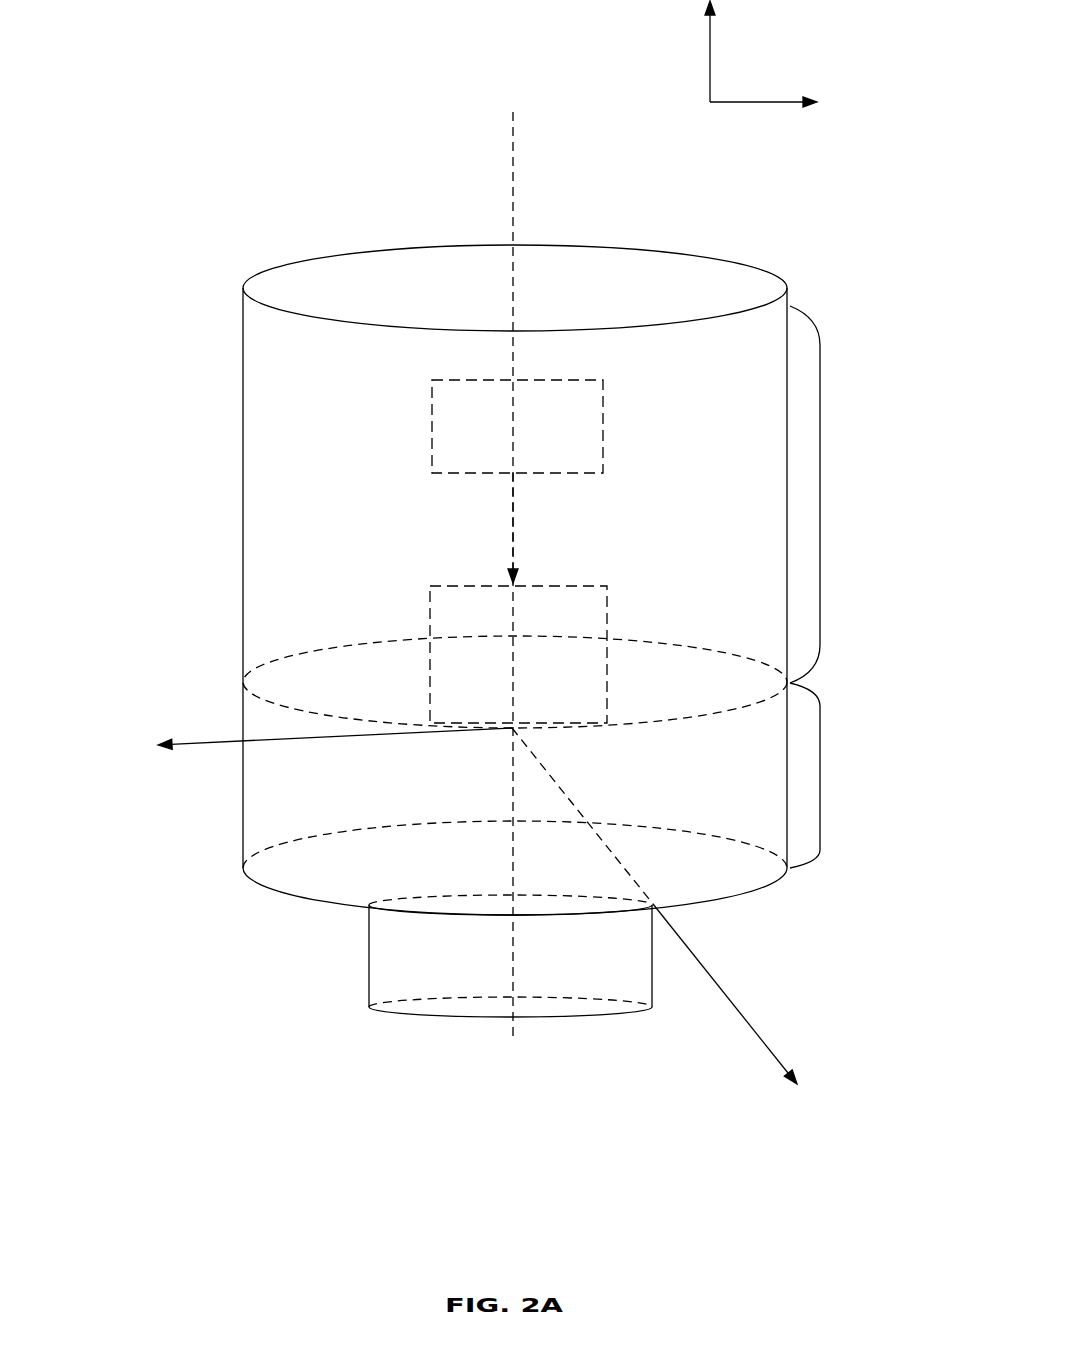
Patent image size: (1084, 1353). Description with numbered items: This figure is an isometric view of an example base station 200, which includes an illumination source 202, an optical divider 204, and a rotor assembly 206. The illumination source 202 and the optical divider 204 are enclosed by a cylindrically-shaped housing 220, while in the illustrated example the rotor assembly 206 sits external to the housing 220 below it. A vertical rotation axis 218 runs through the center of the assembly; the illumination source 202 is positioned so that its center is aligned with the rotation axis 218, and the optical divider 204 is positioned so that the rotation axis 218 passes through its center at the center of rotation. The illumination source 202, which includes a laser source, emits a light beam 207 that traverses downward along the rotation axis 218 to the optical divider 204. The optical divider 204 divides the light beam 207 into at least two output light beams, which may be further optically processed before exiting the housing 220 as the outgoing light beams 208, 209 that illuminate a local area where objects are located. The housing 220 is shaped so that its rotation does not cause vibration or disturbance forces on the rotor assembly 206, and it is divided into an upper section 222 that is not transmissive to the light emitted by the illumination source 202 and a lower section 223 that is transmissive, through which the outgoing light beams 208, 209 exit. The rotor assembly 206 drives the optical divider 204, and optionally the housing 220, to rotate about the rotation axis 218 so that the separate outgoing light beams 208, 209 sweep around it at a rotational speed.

The base station 200 is at (501, 584).
The illumination source 202 is at (517, 426).
The optical divider 204 is at (518, 654).
The rotor assembly 206 is at (510, 956).
The light beam 207 is at (515, 531).
The outgoing light beam 208 is at (281, 754).
The outgoing light beam 209 is at (690, 948).
The rotation axis 218 is at (513, 173).
The housing 220 is at (243, 392).
The section 222 is at (820, 496).
The section 223 is at (820, 777).